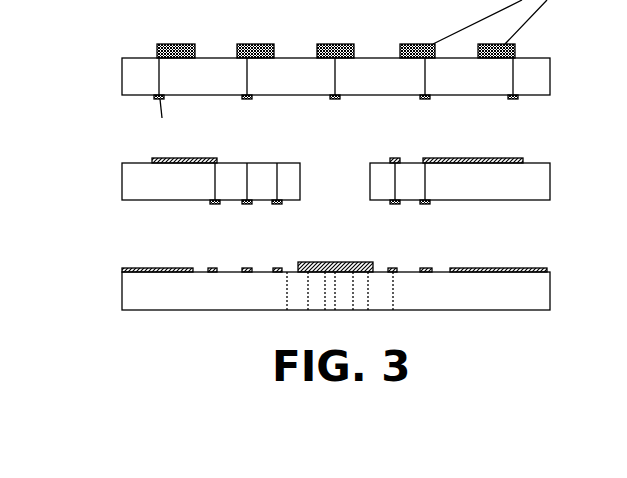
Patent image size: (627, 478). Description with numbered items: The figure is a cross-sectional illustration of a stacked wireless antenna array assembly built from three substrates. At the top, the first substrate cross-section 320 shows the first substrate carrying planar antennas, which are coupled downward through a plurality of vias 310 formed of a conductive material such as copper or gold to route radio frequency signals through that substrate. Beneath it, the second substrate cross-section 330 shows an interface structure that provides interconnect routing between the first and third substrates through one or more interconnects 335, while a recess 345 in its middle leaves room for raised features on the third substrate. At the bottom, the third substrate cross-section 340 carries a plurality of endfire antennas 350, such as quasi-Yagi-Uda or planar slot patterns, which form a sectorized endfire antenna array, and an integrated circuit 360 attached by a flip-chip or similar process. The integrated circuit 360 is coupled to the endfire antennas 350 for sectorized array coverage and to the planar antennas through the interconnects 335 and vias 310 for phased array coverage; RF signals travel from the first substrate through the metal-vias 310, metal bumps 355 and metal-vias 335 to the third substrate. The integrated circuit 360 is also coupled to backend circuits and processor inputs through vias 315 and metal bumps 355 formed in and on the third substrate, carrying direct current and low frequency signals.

The vias 310 is at (516, 96).
The vias 315 is at (360, 307).
The first substrate cross-section 320 is at (133, 77).
The second substrate cross-section 330 is at (130, 183).
The interconnects 335 is at (427, 185).
The third substrate cross-section 340 is at (133, 293).
The recess 345 is at (345, 173).
The endfire antennas 350 is at (140, 268).
The metal bumps 355 is at (243, 161).
The integrated circuit 360 is at (315, 262).